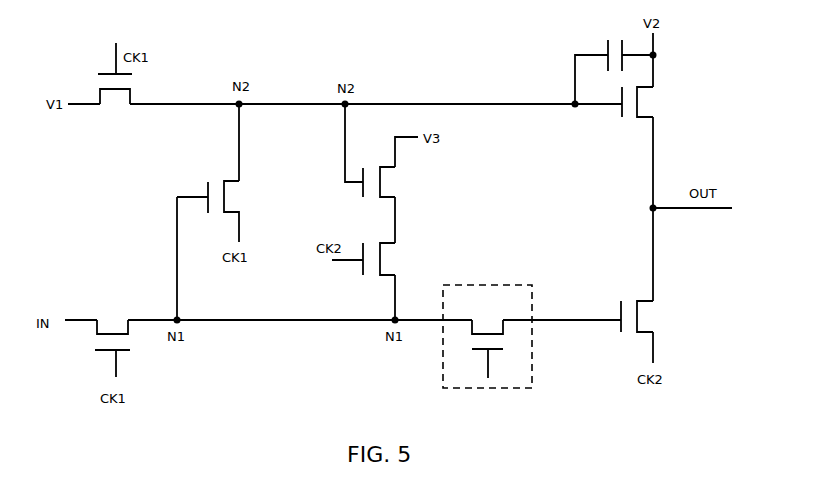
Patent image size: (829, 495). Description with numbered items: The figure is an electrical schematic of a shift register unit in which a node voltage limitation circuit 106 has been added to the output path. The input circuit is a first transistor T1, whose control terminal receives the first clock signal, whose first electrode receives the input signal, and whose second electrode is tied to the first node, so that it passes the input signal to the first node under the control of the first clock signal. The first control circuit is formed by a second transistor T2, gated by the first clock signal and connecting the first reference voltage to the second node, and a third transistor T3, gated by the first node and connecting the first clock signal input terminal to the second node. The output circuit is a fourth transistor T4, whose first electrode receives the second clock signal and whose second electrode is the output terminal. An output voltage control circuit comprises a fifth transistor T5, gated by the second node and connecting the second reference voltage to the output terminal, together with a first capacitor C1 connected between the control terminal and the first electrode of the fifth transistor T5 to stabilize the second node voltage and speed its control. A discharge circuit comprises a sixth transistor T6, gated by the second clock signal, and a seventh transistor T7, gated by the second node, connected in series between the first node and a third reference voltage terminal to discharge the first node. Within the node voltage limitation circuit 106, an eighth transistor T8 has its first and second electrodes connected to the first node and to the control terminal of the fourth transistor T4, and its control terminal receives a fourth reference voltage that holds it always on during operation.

The node voltage limitation circuit 106 is at (487, 325).
The first transistor T1 is at (112, 339).
The second transistor T2 is at (115, 85).
The third transistor T3 is at (210, 211).
The fourth transistor T4 is at (644, 316).
The fifth transistor T5 is at (645, 102).
The sixth transistor T6 is at (371, 259).
The seventh transistor T7 is at (386, 182).
The eighth transistor T8 is at (487, 339).
The first capacitor C1 is at (601, 50).